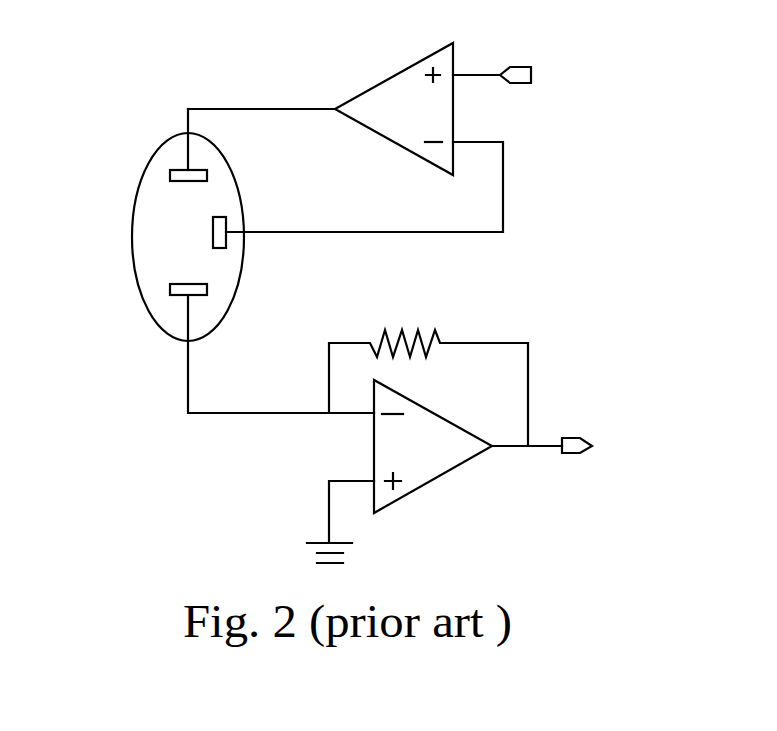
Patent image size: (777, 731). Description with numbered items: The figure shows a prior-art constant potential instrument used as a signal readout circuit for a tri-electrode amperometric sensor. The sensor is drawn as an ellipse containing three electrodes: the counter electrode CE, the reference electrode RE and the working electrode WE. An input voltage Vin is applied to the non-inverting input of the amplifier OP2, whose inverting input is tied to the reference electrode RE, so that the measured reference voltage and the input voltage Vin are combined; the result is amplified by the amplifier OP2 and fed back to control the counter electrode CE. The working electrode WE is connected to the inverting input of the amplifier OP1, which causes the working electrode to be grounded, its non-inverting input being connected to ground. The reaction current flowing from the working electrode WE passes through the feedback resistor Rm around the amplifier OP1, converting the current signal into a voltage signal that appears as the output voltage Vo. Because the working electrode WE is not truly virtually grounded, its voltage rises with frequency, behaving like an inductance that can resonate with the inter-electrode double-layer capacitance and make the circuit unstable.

The counter electrode CE is at (157, 152).
The reference electrode RE is at (335, 195).
The working electrode WE is at (238, 347).
The amplifier OP2 is at (320, 109).
The amplifier OP1 is at (433, 446).
The resistor Rm is at (428, 374).
The input voltage Vin is at (515, 76).
The output voltage Vo is at (562, 448).